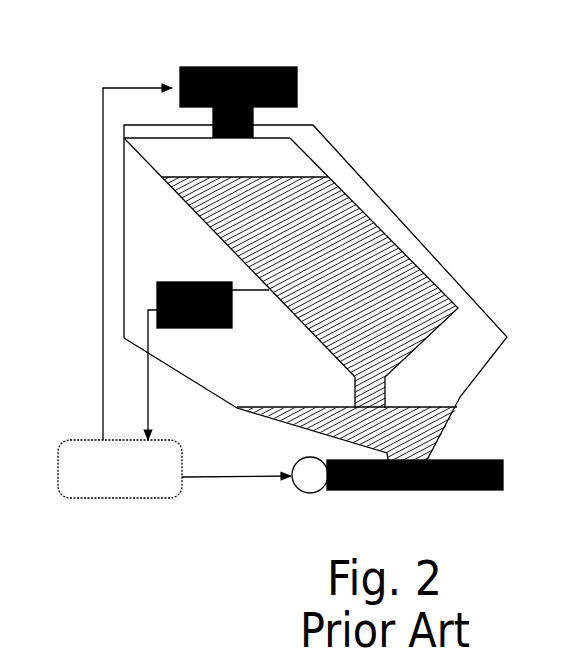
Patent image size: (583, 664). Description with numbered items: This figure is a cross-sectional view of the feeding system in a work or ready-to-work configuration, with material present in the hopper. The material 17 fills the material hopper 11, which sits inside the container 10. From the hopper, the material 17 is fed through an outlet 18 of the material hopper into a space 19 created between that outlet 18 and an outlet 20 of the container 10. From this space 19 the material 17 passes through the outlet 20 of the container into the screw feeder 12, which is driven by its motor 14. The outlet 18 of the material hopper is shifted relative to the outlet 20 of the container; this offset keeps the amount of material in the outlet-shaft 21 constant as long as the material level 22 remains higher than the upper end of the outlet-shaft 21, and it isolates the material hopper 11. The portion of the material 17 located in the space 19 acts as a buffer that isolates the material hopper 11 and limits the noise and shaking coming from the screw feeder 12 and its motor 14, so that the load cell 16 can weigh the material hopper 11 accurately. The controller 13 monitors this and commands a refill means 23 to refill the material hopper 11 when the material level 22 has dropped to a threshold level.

The container 10 is at (349, 165).
The material hopper 11 is at (356, 205).
The screw feeder 12 is at (463, 490).
The controller 13 is at (80, 440).
The motor 14 is at (297, 498).
The load cell 16 is at (185, 275).
The material 17 is at (413, 290).
The outlet of the material hopper 18 is at (386, 380).
The space 19 is at (417, 420).
The outlet of the container 20 is at (395, 457).
The outlet-shaft 21 is at (377, 268).
The material level 22 is at (180, 175).
The refill means 23 is at (302, 90).